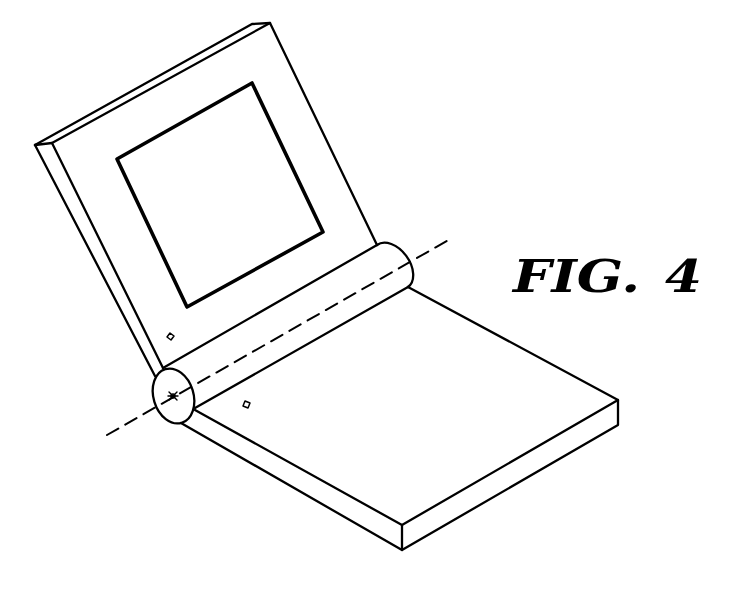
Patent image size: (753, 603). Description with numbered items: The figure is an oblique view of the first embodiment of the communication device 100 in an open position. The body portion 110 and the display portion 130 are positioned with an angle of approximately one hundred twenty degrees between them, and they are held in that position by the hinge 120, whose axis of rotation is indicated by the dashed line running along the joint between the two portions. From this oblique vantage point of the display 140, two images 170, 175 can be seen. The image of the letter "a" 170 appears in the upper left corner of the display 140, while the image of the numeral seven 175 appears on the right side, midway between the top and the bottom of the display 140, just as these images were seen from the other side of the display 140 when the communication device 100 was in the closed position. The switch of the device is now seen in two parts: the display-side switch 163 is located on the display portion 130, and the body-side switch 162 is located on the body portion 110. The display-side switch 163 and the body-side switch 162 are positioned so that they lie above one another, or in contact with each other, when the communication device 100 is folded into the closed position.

The communication device 100 is at (324, 299).
The body portion 110 is at (343, 507).
The hinge 120 is at (373, 260).
The display portion 130 is at (173, 72).
The display 140 is at (250, 127).
The body-side switch 162 is at (243, 405).
The display-side switch 163 is at (165, 336).
The image of an "a" 170 is at (133, 169).
The image of "7" 175 is at (284, 177).